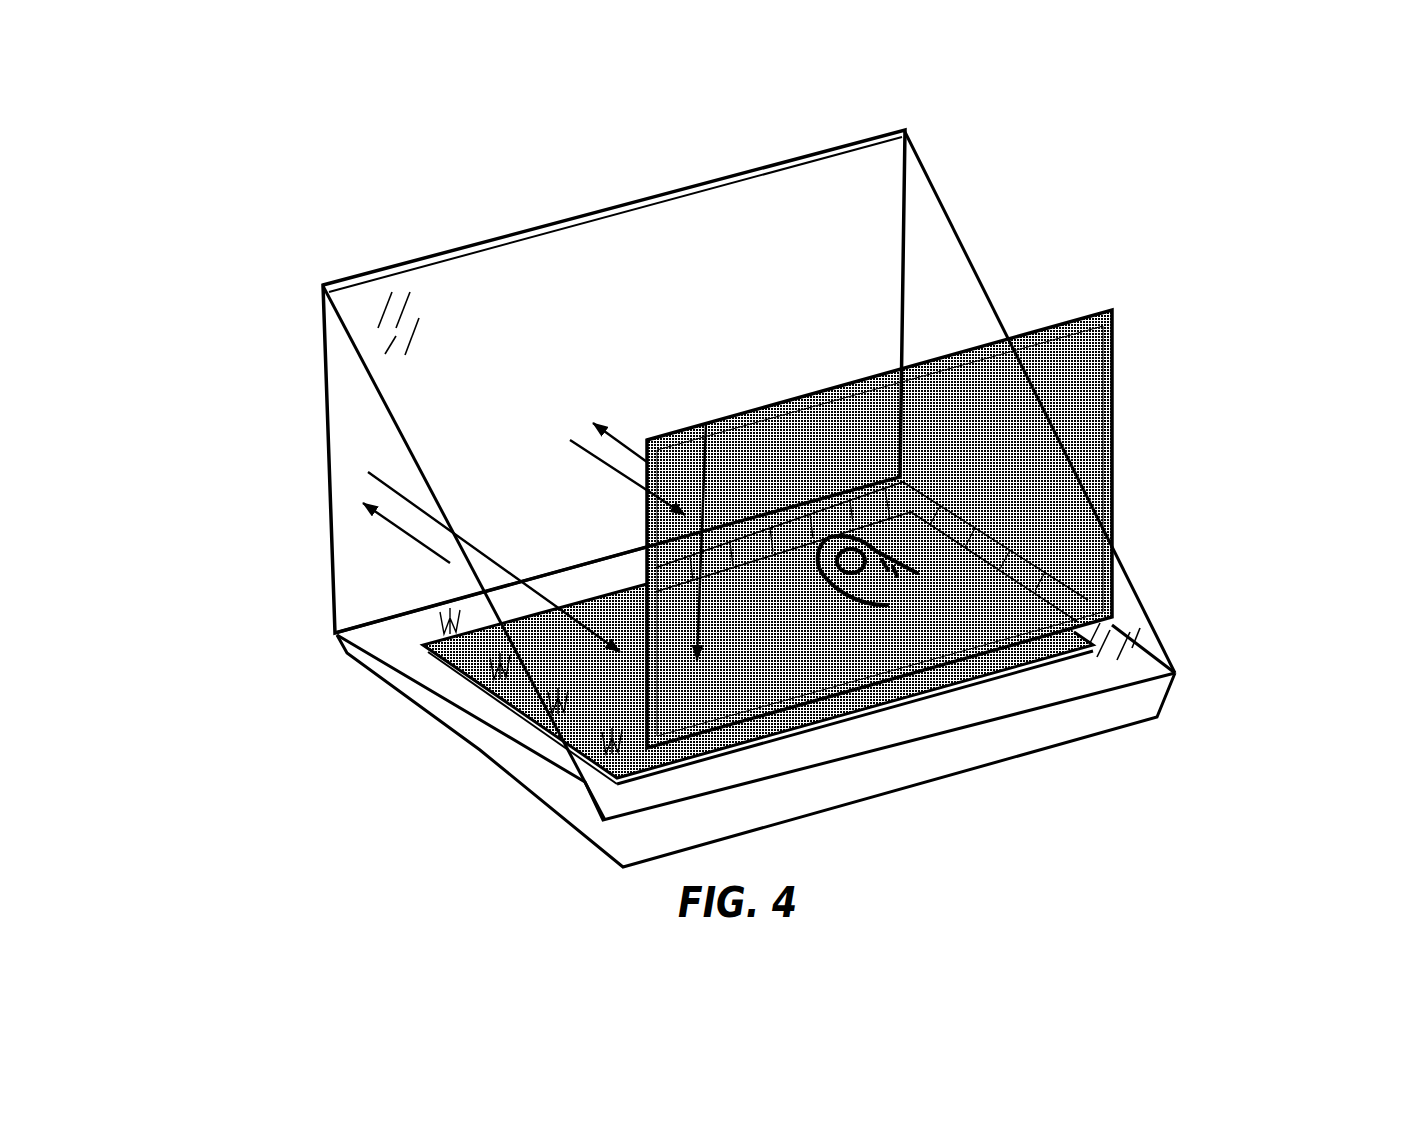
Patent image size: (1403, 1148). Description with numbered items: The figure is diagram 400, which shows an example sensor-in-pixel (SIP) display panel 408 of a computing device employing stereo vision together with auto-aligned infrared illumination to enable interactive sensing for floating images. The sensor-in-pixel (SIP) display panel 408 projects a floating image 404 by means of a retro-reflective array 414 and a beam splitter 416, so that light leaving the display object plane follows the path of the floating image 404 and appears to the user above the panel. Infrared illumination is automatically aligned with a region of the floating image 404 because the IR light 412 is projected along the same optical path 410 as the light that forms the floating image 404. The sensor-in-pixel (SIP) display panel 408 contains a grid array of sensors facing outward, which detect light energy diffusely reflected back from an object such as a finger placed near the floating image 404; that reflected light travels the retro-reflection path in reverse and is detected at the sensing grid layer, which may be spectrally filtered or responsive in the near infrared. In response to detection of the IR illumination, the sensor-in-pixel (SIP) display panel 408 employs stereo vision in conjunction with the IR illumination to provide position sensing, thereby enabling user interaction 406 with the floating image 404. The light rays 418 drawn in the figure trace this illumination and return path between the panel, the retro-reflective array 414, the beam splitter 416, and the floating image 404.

The diagram 400 is at (1220, 145).
The floating image 404 is at (1083, 380).
The user interaction 406 is at (907, 553).
The sensor-in-pixel (SIP) display panel 408 is at (893, 762).
The optical path 410 is at (477, 707).
The IR light 412 is at (612, 730).
The retro-reflective array 414 is at (355, 413).
The beam splitter 416 is at (972, 253).
The light ray 418 is at (835, 690).